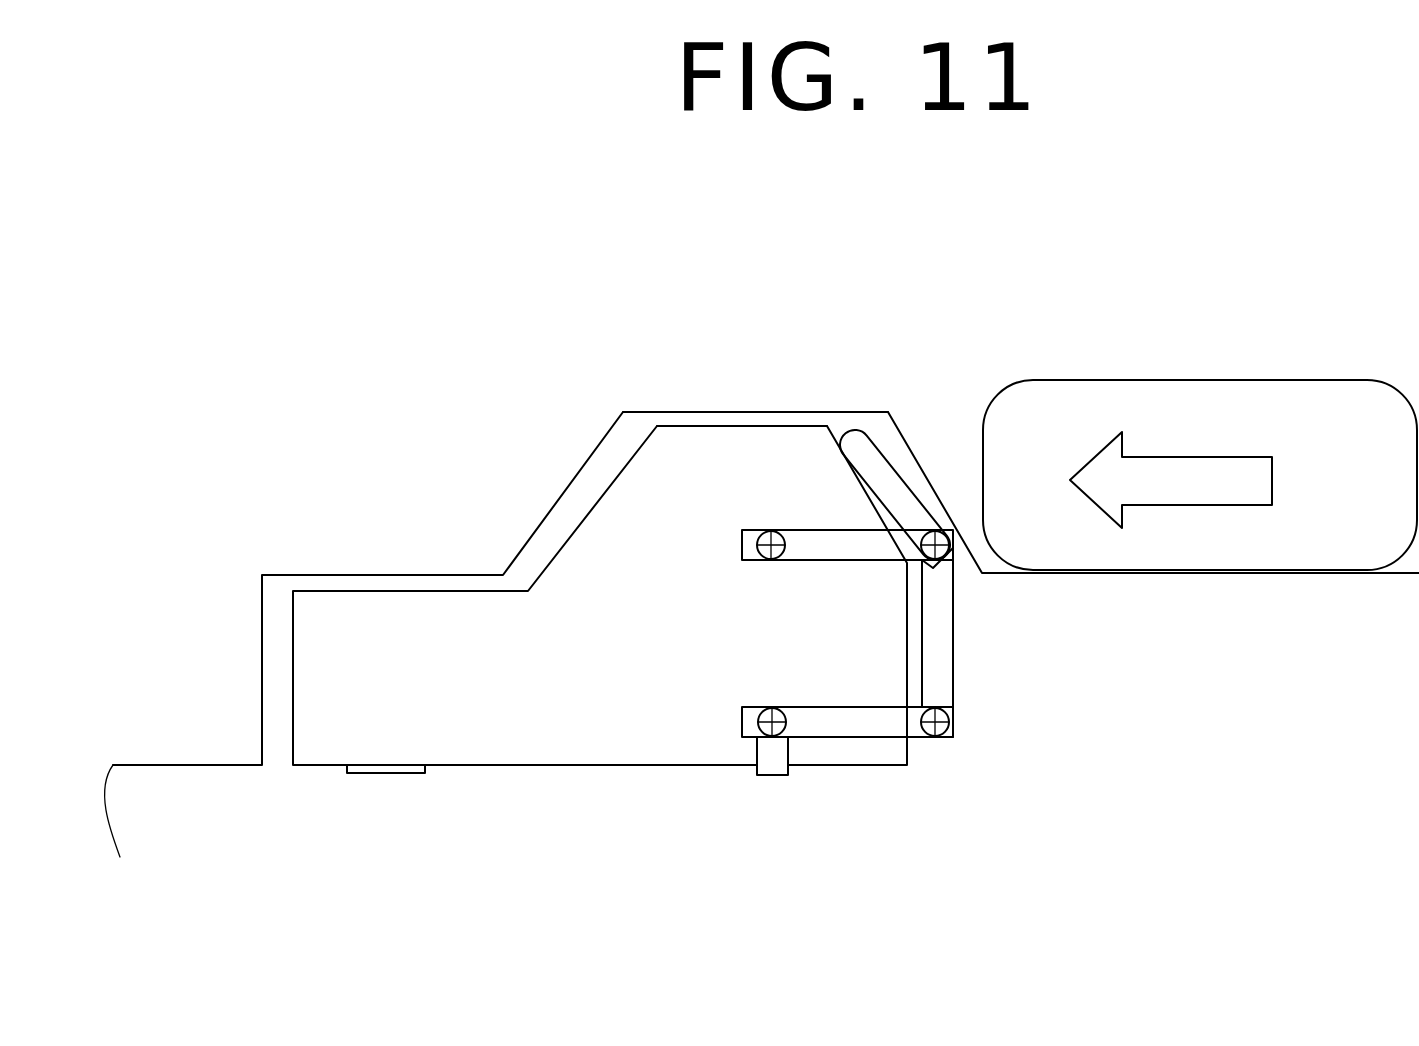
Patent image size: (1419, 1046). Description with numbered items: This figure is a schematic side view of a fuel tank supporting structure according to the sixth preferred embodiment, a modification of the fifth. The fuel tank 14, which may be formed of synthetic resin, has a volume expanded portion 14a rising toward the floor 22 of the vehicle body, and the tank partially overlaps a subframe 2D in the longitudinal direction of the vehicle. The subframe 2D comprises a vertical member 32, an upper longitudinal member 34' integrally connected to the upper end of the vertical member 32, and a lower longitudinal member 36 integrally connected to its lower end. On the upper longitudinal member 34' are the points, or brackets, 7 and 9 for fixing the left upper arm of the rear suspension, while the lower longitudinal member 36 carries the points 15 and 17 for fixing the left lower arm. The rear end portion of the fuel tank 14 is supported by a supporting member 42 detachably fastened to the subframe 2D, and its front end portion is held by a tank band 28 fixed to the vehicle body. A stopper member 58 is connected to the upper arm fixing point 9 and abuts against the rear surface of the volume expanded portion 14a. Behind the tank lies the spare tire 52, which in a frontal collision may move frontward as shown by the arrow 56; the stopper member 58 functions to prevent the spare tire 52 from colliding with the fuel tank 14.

The subframe 2D is at (965, 633).
The upper arm fixing point 7 is at (757, 547).
The upper arm fixing point 9 is at (935, 531).
The fuel tank 14 is at (468, 762).
The volume expanded portion 14a is at (690, 425).
The lower arm fixing point 15 is at (763, 710).
The lower arm fixing point 17 is at (952, 728).
The floor 22 is at (787, 412).
The tank band 28 is at (365, 775).
The vertical member 32 is at (945, 652).
The upper longitudinal member 34' is at (847, 510).
The lower longitudinal member 36 is at (855, 730).
The supporting member 42 is at (768, 767).
The spare tire 52 is at (1225, 387).
The arrow 56 is at (1272, 480).
The stopper member 58 is at (873, 458).